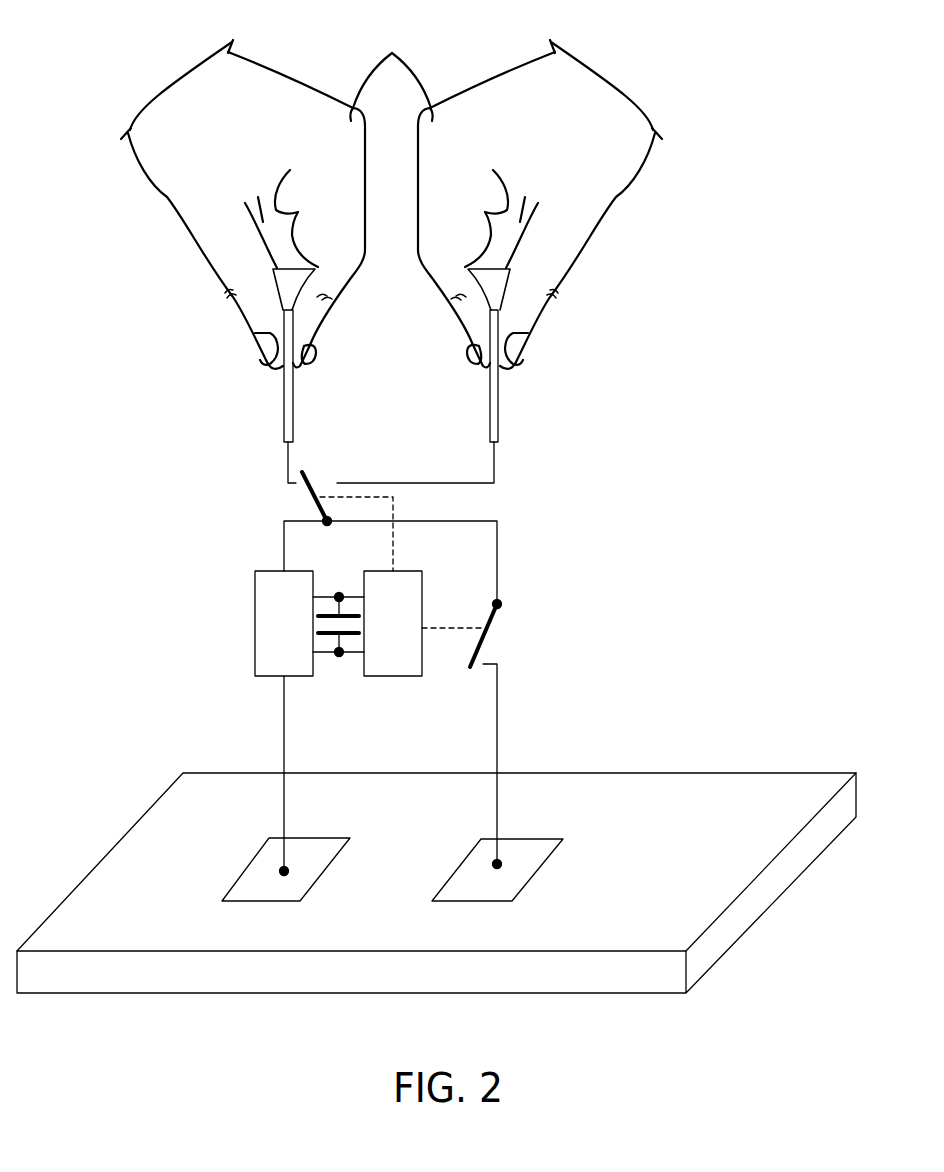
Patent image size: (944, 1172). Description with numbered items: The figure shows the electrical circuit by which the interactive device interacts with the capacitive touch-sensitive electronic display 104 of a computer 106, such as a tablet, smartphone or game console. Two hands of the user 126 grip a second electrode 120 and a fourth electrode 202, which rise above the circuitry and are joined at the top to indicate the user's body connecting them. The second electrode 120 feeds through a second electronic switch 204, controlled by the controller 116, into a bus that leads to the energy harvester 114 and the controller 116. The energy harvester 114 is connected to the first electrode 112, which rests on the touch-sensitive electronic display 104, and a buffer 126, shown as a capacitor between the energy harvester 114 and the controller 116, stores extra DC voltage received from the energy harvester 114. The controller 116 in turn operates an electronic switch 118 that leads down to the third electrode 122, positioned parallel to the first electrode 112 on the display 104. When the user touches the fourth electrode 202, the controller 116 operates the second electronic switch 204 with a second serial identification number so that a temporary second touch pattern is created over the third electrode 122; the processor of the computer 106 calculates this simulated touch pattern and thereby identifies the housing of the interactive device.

The touch-sensitive electronic display 104 is at (679, 788).
The computer 106 is at (790, 941).
The first electrode 112 is at (297, 889).
The energy harvester 114 is at (255, 630).
The controller 116 is at (423, 597).
The electronic switch 118 is at (483, 632).
The second electrode 120 is at (283, 412).
The third electrode 122 is at (522, 870).
The buffer 126 is at (370, 704).
The fourth electrode 202 is at (500, 405).
The second electronic switch 204 is at (312, 493).